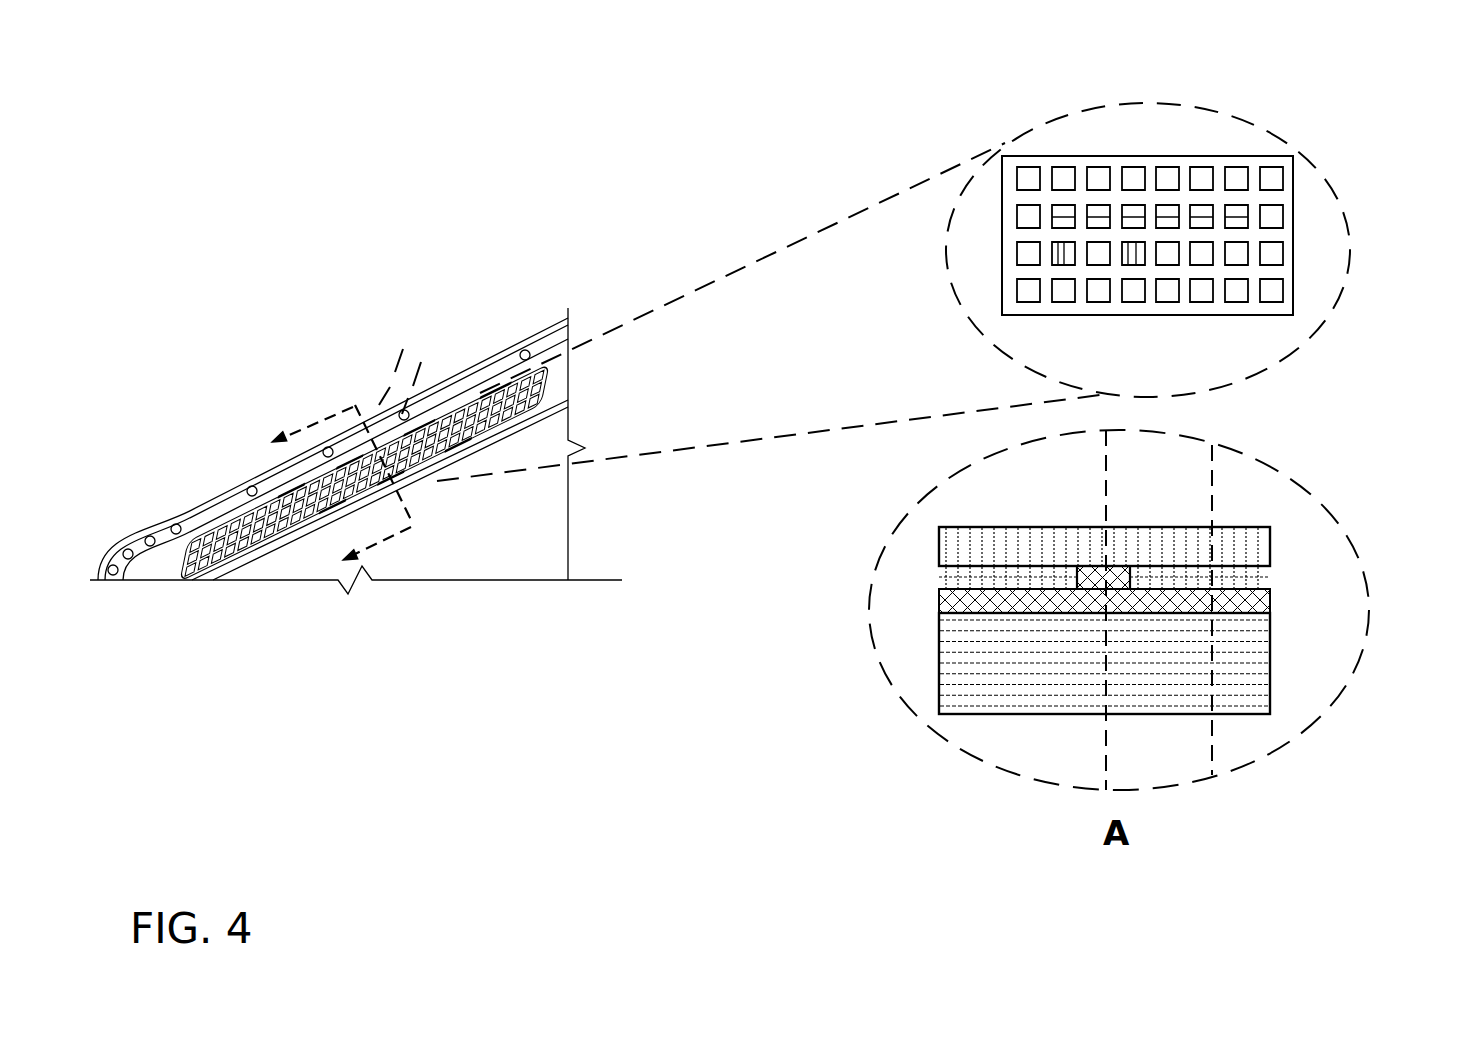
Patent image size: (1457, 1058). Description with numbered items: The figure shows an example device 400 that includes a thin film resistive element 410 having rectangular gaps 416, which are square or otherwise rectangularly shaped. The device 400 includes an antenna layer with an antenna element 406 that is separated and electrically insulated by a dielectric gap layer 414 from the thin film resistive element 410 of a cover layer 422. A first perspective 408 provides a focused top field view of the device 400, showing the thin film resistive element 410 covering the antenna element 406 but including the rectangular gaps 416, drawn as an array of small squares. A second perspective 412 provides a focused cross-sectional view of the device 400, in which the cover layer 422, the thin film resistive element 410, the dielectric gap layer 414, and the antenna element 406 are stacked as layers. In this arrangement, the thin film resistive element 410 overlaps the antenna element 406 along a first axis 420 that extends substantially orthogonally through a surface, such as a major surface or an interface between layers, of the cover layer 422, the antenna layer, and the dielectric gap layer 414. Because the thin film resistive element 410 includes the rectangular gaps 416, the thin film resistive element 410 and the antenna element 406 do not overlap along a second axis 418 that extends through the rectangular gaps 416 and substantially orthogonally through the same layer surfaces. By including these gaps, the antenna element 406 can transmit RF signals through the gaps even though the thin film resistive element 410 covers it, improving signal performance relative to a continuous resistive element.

The device 400 is at (248, 400).
The antenna element 406 is at (970, 653).
The first perspective 408 is at (1057, 112).
The thin film resistive element 410 is at (1010, 272).
The second perspective 412 is at (1305, 495).
The dielectric gap layer 414 is at (1030, 600).
The rectangular gaps 416 is at (1095, 582).
The second axis 418 is at (398, 356).
The first axis 420 is at (432, 362).
The cover layer 422 is at (1000, 545).